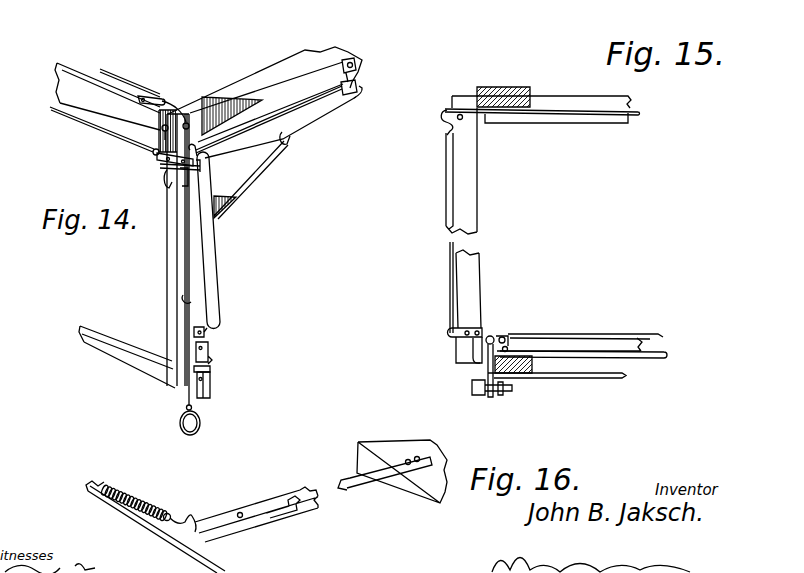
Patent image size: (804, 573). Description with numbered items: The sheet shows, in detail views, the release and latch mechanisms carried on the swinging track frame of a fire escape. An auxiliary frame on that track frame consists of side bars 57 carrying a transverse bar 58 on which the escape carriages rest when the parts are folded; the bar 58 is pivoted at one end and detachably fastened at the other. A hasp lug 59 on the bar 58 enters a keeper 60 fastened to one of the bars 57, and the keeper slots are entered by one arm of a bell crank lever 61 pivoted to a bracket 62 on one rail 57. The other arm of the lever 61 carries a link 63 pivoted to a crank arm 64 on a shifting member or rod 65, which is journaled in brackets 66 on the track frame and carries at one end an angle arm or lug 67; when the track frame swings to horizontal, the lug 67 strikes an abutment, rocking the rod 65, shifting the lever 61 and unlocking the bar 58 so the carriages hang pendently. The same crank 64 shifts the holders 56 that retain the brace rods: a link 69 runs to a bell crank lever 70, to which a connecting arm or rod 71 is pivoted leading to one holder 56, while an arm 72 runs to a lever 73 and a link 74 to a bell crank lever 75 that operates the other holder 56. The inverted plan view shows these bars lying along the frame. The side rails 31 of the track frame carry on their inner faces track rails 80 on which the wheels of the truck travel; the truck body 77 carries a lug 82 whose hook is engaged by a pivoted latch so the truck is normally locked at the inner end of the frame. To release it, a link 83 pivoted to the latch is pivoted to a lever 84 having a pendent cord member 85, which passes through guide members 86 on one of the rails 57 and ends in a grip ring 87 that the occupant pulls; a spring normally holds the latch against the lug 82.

In FIG. 14, the side rail 31 is at (66, 88).
In FIG. 15, the side rail 31 is at (467, 222).
In FIG. 14, the holder 56 is at (358, 83).
In FIG. 14, the side bar 57 is at (183, 241).
In FIG. 15, the side bar 57 is at (510, 88).
In FIG. 14, the transverse bar 58 is at (103, 337).
In FIG. 14, the hasp lug 59 is at (212, 382).
In FIG. 14, the keeper 60 is at (210, 369).
In FIG. 14, the bell crank lever 61 is at (212, 343).
In FIG. 14, the bracket 62 is at (205, 325).
In FIG. 14, the link 63 is at (216, 251).
In FIG. 15, the link 63 is at (500, 392).
In FIG. 14, the crank arm 64 is at (246, 169).
In FIG. 14, the shifting member or rod 65 is at (329, 116).
In FIG. 15, the shifting member or rod 65 is at (597, 378).
In FIG. 14, the bracket 66 is at (170, 183).
In FIG. 14, the angle arm or lug 67 is at (364, 98).
In FIG. 14, the link 69 is at (193, 152).
In FIG. 15, the link 69 is at (495, 337).
In FIG. 15, the bell crank lever 70 is at (507, 338).
In FIG. 14, the connecting arm or rod 71 is at (257, 120).
In FIG. 15, the connecting arm or rod 71 is at (597, 348).
In FIG. 14, the arm 72 is at (163, 165).
In FIG. 15, the arm 72 is at (478, 368).
In FIG. 14, the lever 73 is at (152, 155).
In FIG. 15, the lever 73 is at (467, 327).
In FIG. 14, the link 74 is at (58, 118).
In FIG. 15, the link 74 is at (450, 301).
In FIG. 15, the bell crank lever 75 is at (470, 133).
In FIG. 16, the body 77 is at (405, 442).
In FIG. 15, the track rail 80 is at (663, 338).
In FIG. 16, the lug 82 is at (375, 480).
In FIG. 14, the link 83 is at (134, 83).
In FIG. 14, the lever 84 is at (160, 97).
In FIG. 14, the pendent cord member 85 is at (190, 281).
In FIG. 14, the guide member 86 is at (162, 133).
In FIG. 14, the grip ring 87 is at (201, 422).